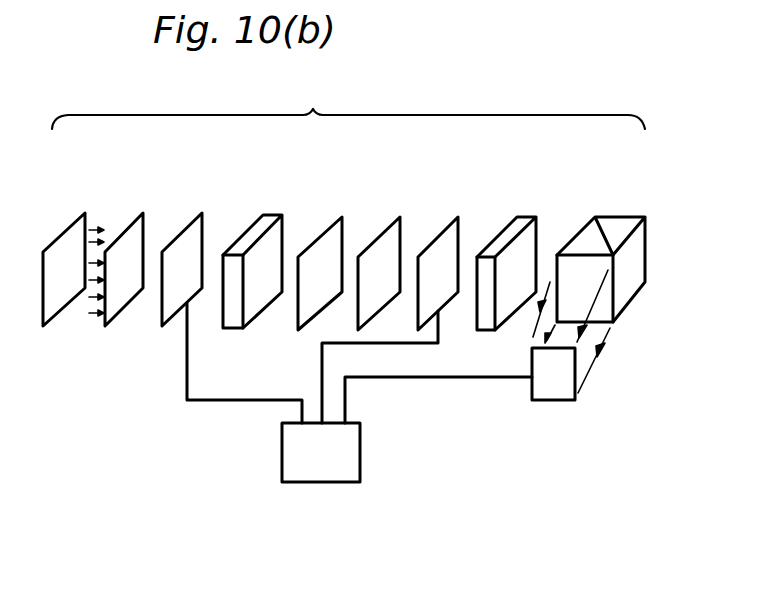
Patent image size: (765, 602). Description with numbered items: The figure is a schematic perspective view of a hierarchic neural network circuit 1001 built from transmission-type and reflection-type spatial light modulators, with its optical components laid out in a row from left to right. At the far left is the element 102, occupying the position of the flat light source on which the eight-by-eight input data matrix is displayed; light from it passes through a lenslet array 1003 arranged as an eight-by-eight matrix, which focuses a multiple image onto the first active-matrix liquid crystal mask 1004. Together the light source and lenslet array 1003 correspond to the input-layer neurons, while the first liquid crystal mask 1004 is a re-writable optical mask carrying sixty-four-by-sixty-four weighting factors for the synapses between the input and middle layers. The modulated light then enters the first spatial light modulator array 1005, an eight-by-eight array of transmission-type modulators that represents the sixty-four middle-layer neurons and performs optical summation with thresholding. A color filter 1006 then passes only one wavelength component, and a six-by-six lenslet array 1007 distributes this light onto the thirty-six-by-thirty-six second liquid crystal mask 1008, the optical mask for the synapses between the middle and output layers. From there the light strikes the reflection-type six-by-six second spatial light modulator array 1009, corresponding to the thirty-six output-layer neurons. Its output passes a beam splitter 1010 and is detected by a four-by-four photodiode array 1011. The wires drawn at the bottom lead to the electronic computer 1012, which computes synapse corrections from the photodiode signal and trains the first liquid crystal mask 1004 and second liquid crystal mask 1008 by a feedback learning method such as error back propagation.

The neural network circuit 1001 is at (348, 98).
The incident light 102 is at (69, 218).
The lenslet array 1003 is at (139, 212).
The AM-LC(1) 1004 is at (194, 213).
The SLM array (1) 1005 is at (263, 215).
The color filter 1006 is at (323, 231).
The lenslet array 1007 is at (392, 217).
The AM-LC(2) 1008 is at (448, 226).
The SLM array (2) 1009 is at (523, 216).
The beam splitter 1010 is at (583, 226).
The photodiode array 1011 is at (547, 400).
The electronic computer 1012 is at (360, 448).